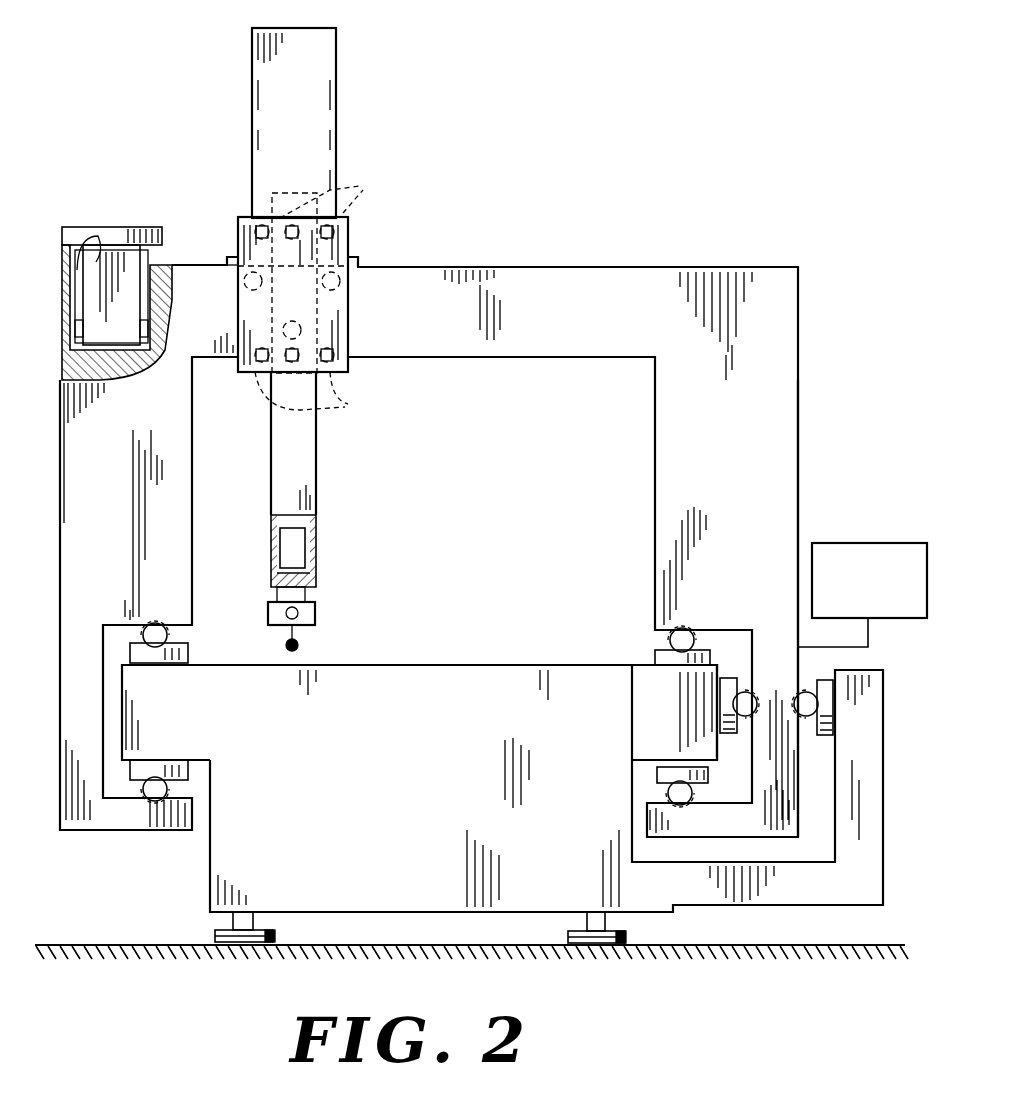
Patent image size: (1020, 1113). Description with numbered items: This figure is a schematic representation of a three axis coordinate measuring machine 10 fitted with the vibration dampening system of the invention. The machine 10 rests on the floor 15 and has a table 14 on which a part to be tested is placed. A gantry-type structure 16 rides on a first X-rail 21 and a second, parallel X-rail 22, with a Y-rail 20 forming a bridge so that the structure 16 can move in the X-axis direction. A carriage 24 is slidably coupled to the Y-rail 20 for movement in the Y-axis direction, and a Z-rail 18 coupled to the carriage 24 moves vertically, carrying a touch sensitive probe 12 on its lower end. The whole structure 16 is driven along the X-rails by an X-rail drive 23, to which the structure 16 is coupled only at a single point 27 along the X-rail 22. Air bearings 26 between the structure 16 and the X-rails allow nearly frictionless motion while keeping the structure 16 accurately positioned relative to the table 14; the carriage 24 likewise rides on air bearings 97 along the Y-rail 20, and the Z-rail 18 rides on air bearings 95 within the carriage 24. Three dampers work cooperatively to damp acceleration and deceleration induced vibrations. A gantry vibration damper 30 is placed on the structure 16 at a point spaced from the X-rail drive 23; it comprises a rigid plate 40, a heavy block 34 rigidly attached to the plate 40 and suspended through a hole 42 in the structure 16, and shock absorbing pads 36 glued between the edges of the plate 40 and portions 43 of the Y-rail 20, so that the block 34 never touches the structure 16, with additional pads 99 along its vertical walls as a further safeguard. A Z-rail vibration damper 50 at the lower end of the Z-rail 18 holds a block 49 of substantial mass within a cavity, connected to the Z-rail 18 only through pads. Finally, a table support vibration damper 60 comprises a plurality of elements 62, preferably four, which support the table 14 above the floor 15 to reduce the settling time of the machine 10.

The coordinate measuring machine 10 is at (52, 516).
The touch sensitive probe 12 is at (316, 612).
The table 14 is at (439, 784).
The floor 15 is at (420, 946).
The gantry-type structure 16 is at (800, 410).
The Z-rail 18 is at (316, 470).
The Y-rail 20 is at (512, 270).
The first X-rail 21 is at (175, 712).
The second X-rail 22 is at (678, 735).
The X-rail drive 23 is at (838, 543).
The carriage 24 is at (350, 245).
The air bearings 26 is at (175, 634).
The coupling point 27 is at (805, 644).
The gantry vibration damper 30 is at (108, 227).
The block 34 is at (108, 270).
The shock absorbing pads 36 is at (194, 216).
The plate 40 is at (134, 227).
The hole 42 is at (72, 240).
The portions of Y-rail 43 is at (231, 266).
The block 49 is at (300, 541).
The Z-rail vibration damper 50 is at (334, 569).
The table support vibration damper 60 is at (214, 914).
The elements 62 is at (277, 940).
The air bearings 95 is at (322, 297).
The air bearings 97 is at (246, 290).
The additional pads 99 is at (76, 328).